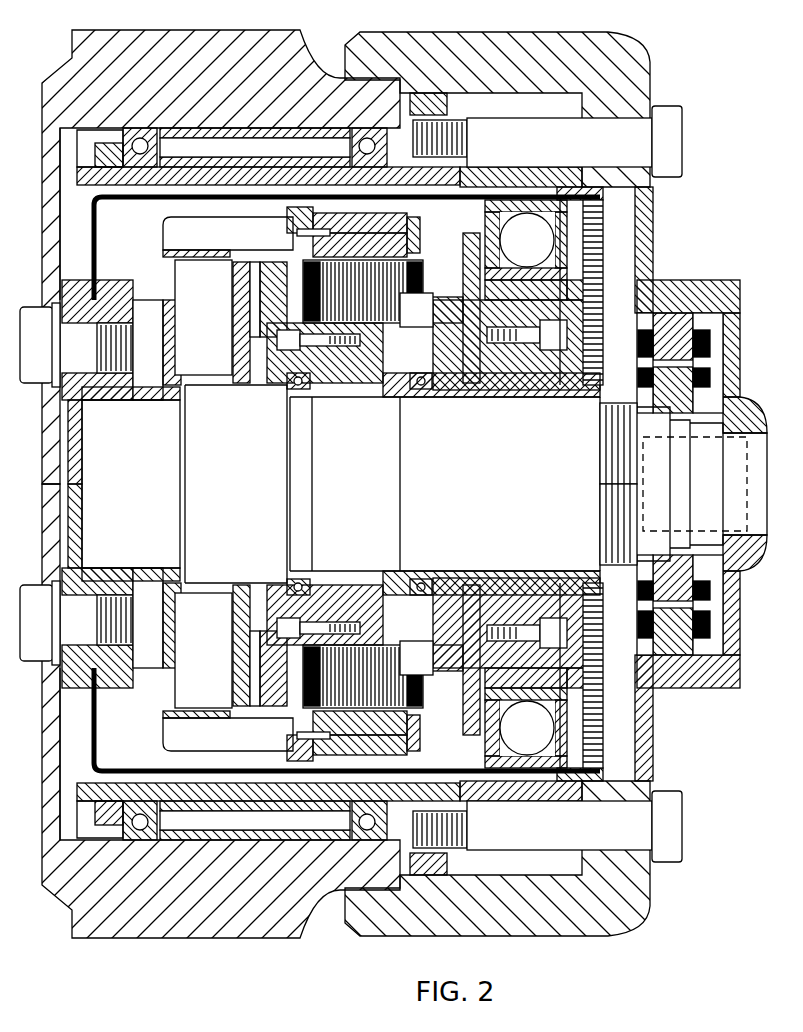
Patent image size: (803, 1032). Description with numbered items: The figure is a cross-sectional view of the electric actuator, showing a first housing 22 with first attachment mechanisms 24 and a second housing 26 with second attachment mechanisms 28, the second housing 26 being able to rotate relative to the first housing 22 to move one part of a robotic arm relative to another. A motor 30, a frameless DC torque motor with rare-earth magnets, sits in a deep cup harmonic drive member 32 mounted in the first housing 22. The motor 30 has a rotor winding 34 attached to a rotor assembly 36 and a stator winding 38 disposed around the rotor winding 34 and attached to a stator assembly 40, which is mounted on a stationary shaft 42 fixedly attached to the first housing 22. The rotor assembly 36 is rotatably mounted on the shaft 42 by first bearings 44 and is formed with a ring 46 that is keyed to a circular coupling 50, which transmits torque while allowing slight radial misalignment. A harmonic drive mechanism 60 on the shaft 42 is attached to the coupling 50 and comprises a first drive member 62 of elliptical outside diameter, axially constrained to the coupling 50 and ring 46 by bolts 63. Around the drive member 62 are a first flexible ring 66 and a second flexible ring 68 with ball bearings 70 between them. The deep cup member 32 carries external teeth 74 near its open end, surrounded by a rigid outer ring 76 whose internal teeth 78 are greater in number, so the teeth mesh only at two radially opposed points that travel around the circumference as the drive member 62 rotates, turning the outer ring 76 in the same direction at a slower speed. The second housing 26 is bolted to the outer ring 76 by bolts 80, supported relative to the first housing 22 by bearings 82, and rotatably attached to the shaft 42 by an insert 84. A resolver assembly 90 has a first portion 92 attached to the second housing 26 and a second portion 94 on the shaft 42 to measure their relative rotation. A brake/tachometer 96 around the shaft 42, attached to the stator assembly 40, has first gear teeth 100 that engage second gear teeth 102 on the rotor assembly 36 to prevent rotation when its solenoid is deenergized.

The first housing 22 is at (55, 168).
The first attachment mechanisms 24 is at (205, 30).
The second housing 26 is at (440, 168).
The second attachment mechanisms 28 is at (495, 30).
The motor 30 is at (390, 375).
The deep cup harmonic drive member 32 is at (98, 275).
The rotor winding 34 is at (383, 318).
The rotor assembly 36 is at (328, 378).
The stator winding 38 is at (420, 230).
The stator assembly 40 is at (148, 285).
The stationary shaft 42 is at (220, 466).
The first bearings 44 is at (430, 388).
The ring 46 is at (432, 295).
The circular coupling 50 is at (480, 578).
The harmonic drive mechanism 60 is at (517, 375).
The first drive member 62 is at (555, 290).
The bolts 63 is at (550, 340).
The first flexible ring 66 is at (568, 267).
The second flexible ring 68 is at (565, 212).
The ball bearings 70 is at (540, 244).
The teeth 74 is at (560, 194).
The rigid outer ring 76 is at (570, 172).
The teeth 78 is at (600, 230).
The bolts 80 is at (672, 132).
The bearings 82 is at (367, 145).
The insert 84 is at (738, 478).
The resolver assembly 90 is at (725, 300).
The first portion 92 is at (683, 305).
The second portion 94 is at (715, 370).
The brake/tachometer 96 is at (193, 306).
The first gear teeth 100 is at (248, 315).
The second gear teeth 102 is at (270, 380).